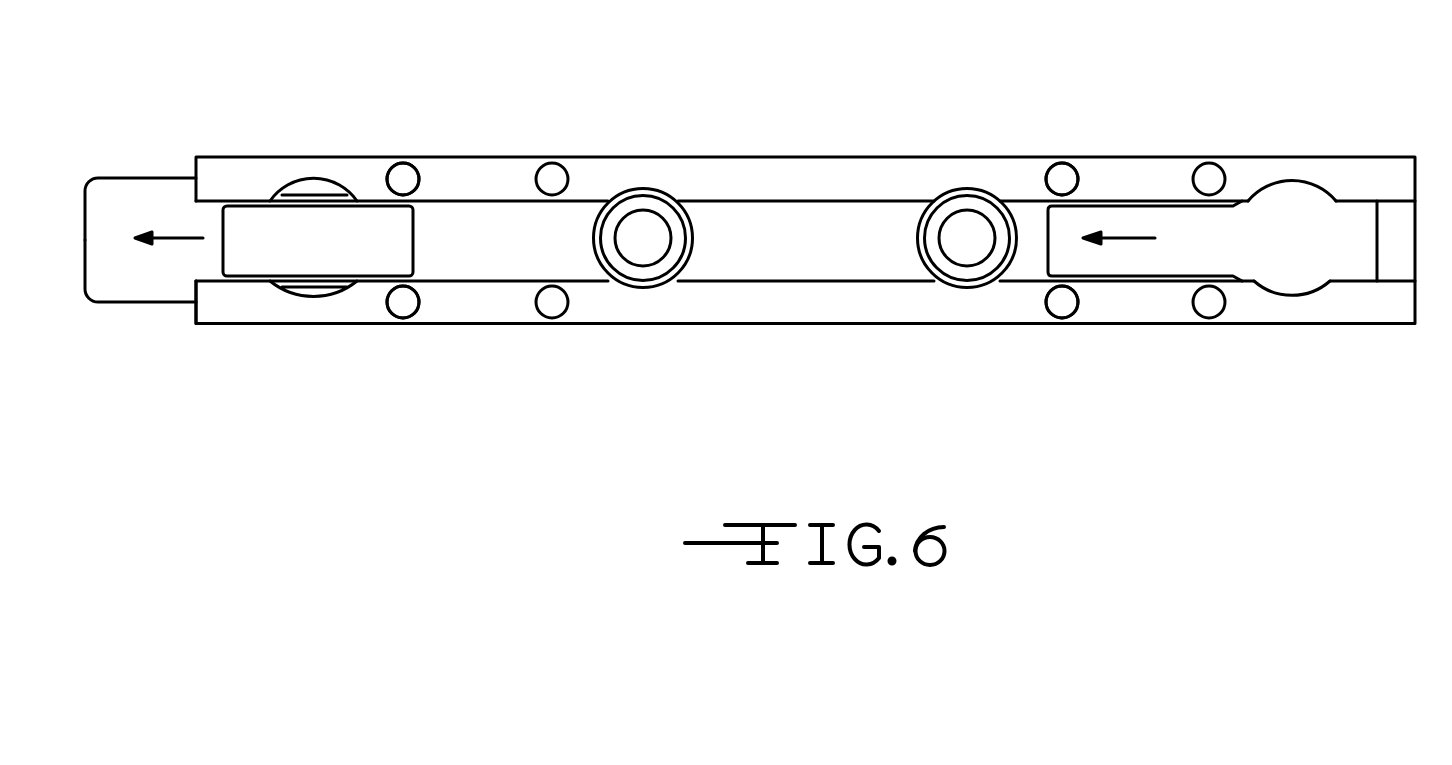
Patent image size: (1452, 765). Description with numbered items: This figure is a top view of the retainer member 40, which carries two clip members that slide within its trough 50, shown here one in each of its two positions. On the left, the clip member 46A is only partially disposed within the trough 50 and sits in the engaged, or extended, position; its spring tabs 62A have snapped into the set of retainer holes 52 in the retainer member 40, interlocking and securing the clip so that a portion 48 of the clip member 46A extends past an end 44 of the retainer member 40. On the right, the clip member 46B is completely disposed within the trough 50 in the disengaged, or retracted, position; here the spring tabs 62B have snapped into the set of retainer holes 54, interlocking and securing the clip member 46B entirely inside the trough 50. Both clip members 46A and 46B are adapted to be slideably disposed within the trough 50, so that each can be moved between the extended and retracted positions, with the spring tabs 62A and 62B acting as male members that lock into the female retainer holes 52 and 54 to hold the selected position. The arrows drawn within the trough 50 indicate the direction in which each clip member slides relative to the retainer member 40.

The retainer member 40 is at (517, 305).
The end 44 is at (192, 315).
The clip member 46A is at (162, 282).
The clip member 46B is at (1330, 255).
The portion 48 is at (132, 177).
The trough 50 is at (472, 262).
The set of retainer holes 52 is at (418, 175).
The set of retainer holes 54 is at (1068, 172).
The spring tabs 62A is at (403, 173).
The spring tabs 62B is at (1057, 173).